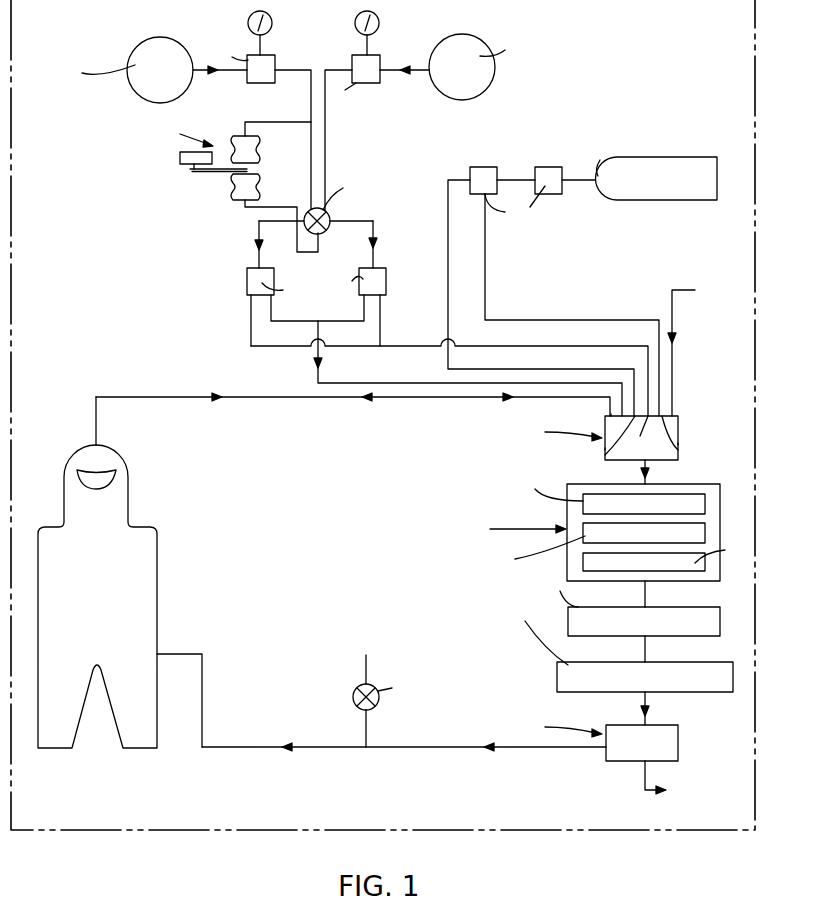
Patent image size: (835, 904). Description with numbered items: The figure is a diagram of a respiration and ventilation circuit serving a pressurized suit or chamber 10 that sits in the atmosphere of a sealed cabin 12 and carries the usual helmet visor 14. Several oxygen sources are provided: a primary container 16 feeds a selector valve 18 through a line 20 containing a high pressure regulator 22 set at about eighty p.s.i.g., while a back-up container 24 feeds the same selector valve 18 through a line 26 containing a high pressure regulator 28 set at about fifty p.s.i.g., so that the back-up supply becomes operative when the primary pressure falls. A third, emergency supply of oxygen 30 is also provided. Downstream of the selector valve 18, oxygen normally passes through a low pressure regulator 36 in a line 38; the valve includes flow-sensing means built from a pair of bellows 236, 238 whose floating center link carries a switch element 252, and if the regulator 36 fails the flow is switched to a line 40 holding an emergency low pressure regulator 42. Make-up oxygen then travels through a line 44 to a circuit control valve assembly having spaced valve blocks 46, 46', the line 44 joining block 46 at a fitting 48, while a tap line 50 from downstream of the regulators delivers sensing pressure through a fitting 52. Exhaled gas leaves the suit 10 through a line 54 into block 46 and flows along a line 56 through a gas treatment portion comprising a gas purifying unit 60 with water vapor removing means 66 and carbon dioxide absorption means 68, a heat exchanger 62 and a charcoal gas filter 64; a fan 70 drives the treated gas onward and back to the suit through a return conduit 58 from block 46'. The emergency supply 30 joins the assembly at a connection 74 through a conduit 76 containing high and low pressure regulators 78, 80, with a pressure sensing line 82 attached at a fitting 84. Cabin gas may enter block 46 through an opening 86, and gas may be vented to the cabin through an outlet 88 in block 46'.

The suit or chamber 10 is at (157, 587).
The sealed cabin 12 is at (180, 832).
The helmet visor 14 is at (115, 480).
The oxygen container 16 is at (131, 90).
The selector valve 18 is at (330, 213).
The conduit or line 20 is at (311, 100).
The high pressure regulator 22 is at (268, 58).
The oxygen container 24 is at (490, 78).
The line 26 is at (326, 152).
The high pressure regulator 28 is at (373, 58).
The emergency supply of oxygen 30 is at (650, 199).
The low pressure regulator 36 is at (247, 281).
The line 38 is at (258, 235).
The line 40 is at (375, 232).
The emergency low pressure regulator 42 is at (386, 280).
The conduit or line 44 is at (413, 347).
The valve block 46 is at (562, 447).
The valve block 46' is at (565, 729).
The fitting 48 is at (641, 436).
The tap line 50 is at (334, 383).
The fitting 52 is at (610, 422).
The line 54 is at (268, 400).
The line 56 is at (640, 476).
The conduit 58 is at (455, 750).
The gas purifying unit 60 is at (564, 530).
The heat exchanger 62 is at (574, 608).
The gas filter 64 is at (578, 653).
The water vapor removing means 66 is at (598, 497).
The carbon dioxide absorption means 68 is at (552, 546).
The fan 70 is at (667, 552).
The connection 74 is at (612, 446).
The conduit 76 is at (450, 281).
The high pressure regulator 78 is at (545, 167).
The low pressure regulator 80 is at (481, 167).
The pressure sensing line 82 is at (522, 320).
The fitting 84 is at (680, 446).
The opening 86 is at (679, 418).
The outlet 88 is at (640, 763).
The bellows 236 is at (238, 138).
The bellows 238 is at (236, 190).
The switch element 252 is at (210, 172).